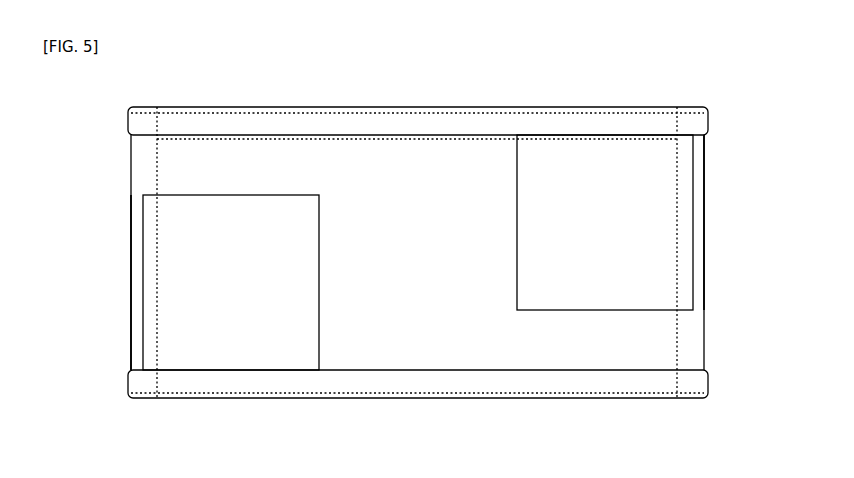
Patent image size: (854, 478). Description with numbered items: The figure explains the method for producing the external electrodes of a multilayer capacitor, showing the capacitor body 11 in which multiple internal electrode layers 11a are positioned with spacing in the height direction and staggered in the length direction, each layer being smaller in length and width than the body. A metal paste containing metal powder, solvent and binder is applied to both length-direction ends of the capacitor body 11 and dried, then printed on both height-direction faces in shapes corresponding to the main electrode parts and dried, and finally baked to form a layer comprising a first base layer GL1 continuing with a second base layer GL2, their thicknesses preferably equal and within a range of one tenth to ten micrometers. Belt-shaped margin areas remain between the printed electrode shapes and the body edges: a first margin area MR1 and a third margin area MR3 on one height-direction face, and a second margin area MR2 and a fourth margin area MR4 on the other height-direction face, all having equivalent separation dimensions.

The capacitor body 11 is at (131, 166).
The internal electrode layer 11a is at (403, 123).
The first base layer GL1 is at (296, 123).
The second base layer GL2 is at (605, 218).
The first margin area MR1 is at (133, 246).
The second margin area MR2 is at (105, 282).
The third margin area MR3 is at (704, 247).
The fourth margin area MR4 is at (729, 222).